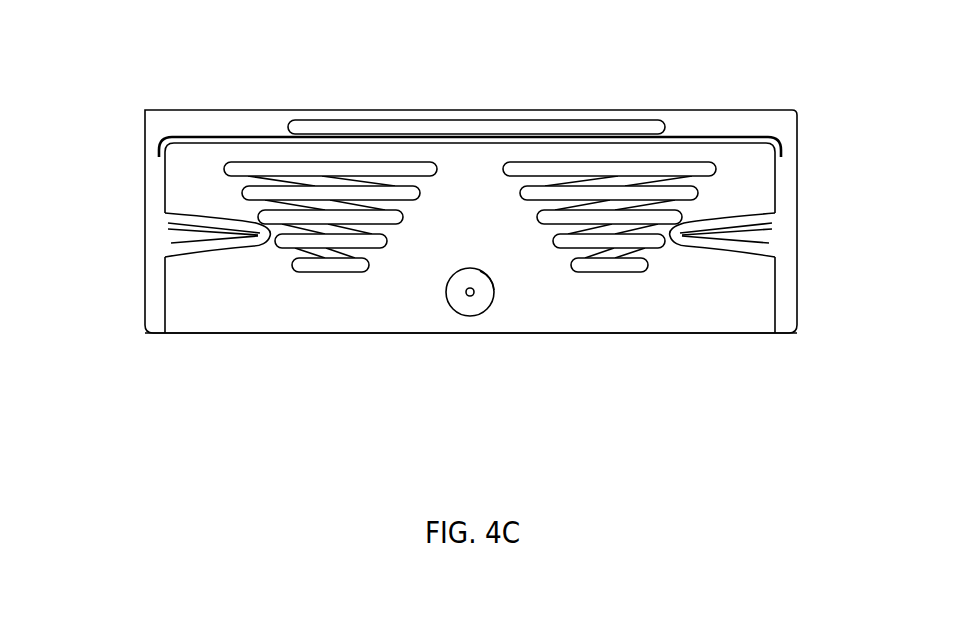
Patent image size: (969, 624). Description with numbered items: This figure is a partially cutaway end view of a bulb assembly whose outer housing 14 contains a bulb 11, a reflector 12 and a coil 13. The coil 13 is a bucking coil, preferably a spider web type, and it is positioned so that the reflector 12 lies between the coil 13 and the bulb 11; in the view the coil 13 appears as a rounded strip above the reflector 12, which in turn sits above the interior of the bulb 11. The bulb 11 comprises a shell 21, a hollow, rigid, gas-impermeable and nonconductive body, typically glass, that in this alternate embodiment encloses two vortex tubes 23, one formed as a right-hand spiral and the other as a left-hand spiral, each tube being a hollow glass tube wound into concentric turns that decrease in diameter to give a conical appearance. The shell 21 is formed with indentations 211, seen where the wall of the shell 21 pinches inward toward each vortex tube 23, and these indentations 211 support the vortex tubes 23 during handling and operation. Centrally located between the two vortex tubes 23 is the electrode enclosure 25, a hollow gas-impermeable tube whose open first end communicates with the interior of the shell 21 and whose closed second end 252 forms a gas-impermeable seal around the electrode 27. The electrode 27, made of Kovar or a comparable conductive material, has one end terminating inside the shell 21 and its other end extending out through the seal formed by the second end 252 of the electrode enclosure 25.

The bulb 11 is at (410, 335).
The reflector 12 is at (772, 141).
The coil 13 is at (510, 127).
The housing 14 is at (145, 167).
The shell 21 is at (165, 285).
The indentations 211 is at (258, 247).
The vortex tube 23 is at (313, 272).
The electrode enclosure 25 is at (462, 314).
The second end 252 is at (494, 286).
The electrode 27 is at (474, 297).